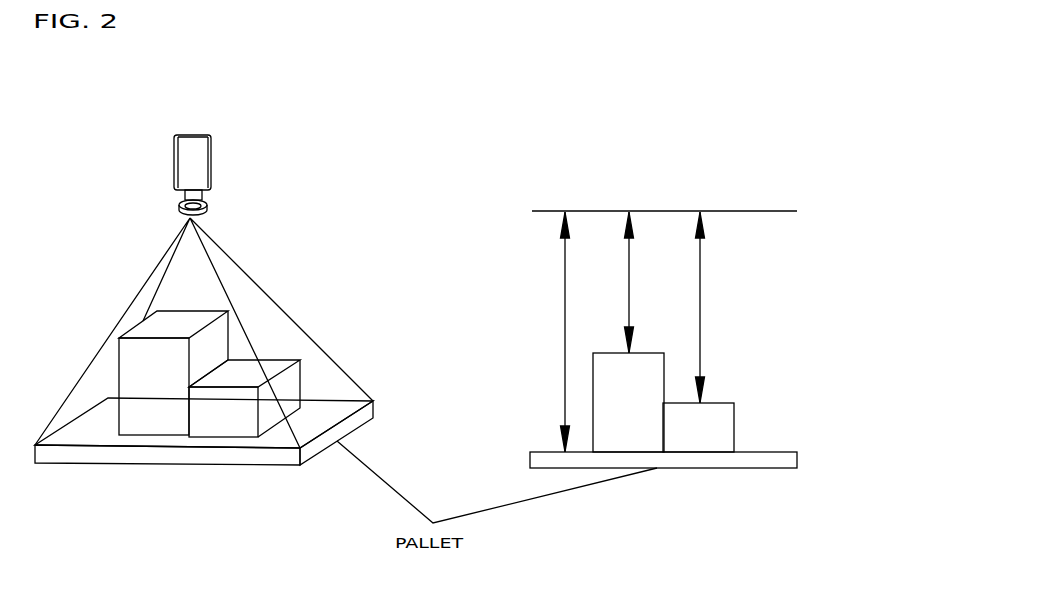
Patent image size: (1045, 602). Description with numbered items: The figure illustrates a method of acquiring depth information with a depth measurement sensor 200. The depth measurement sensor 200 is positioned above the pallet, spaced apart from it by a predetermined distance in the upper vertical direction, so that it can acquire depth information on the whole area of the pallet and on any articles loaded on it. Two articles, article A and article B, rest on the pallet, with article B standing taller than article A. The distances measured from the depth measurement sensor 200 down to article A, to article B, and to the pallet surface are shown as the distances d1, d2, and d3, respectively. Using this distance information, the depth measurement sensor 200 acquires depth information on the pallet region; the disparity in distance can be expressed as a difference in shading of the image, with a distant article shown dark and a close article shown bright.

The depth measurement sensor 200 is at (416, 279).
The article A is at (461, 406).
The article B is at (391, 381).
The distance to article A d1 is at (690, 307).
The distance to article B d2 is at (619, 282).
The distance to pallet d3 is at (554, 332).